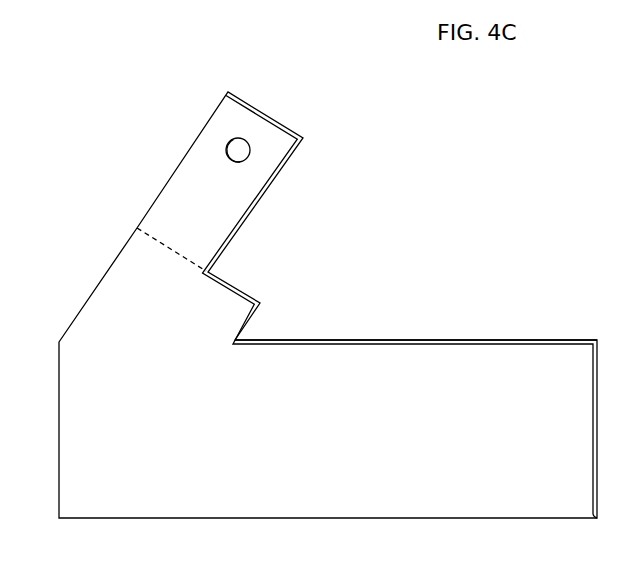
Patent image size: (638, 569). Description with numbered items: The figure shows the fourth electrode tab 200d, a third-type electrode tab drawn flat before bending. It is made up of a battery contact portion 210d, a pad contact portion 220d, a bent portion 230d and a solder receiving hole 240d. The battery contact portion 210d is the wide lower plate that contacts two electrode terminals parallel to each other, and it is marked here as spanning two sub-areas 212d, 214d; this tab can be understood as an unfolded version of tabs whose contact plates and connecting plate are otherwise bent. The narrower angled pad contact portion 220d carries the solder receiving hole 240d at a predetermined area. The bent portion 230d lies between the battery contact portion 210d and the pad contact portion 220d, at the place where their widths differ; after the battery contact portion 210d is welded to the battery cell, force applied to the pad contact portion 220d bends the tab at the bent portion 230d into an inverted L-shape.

The fourth electrode tab 200d is at (108, 189).
The battery contact portion 210d is at (455, 278).
The first base portion 212d is at (280, 355).
The second base portion 214d is at (532, 357).
The pad contact portion 220d is at (242, 203).
The bent portion 230d is at (200, 261).
The solder receiving hole 240d is at (252, 150).